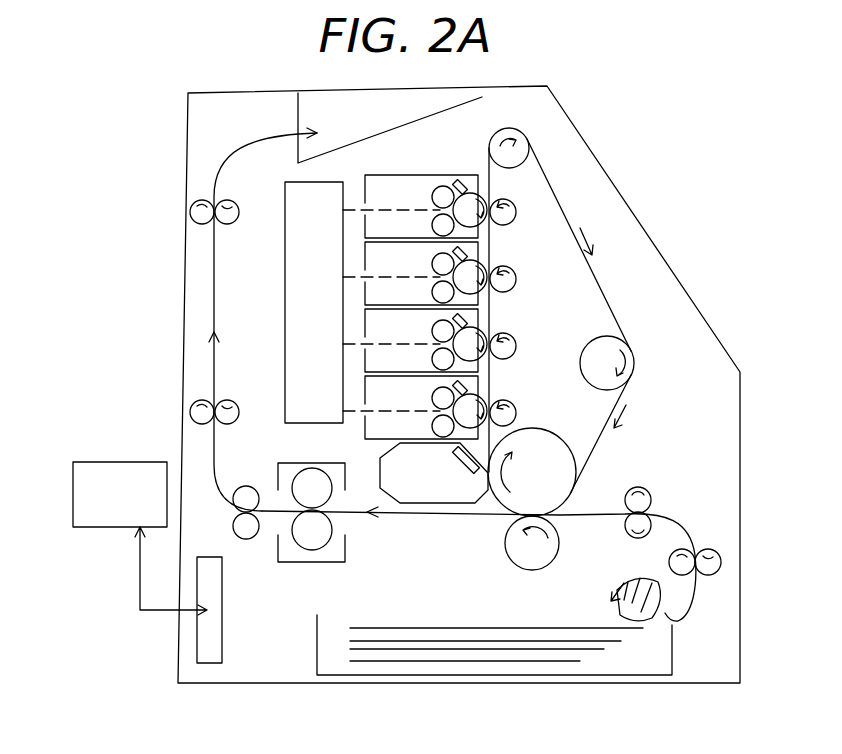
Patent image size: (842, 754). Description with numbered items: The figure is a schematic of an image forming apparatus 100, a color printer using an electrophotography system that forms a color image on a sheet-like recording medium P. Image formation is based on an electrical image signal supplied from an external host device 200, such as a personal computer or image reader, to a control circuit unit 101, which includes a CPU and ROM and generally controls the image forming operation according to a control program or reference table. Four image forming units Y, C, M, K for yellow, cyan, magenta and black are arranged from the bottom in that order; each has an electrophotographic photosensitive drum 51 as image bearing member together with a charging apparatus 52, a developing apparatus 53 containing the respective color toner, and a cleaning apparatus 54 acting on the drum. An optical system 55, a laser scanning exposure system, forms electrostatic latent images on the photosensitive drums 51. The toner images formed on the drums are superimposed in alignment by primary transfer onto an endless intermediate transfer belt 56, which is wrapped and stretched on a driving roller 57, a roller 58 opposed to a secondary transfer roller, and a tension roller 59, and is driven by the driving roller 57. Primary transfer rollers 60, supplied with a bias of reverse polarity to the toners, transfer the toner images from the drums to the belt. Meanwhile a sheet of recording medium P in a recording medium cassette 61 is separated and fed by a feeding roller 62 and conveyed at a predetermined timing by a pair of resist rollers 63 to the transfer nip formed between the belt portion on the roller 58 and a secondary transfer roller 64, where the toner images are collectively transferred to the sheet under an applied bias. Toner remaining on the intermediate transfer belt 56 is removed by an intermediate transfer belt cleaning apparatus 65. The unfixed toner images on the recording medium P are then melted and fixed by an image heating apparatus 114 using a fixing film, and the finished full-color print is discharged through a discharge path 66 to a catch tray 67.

The image forming apparatus 100 is at (663, 223).
The electrophotographic photosensitive drum 51 is at (480, 202).
The charging apparatus 52 is at (432, 197).
The developing apparatus 53 is at (432, 225).
The cleaning apparatus 54 is at (459, 181).
The optical system 55 is at (285, 262).
The intermediate transfer belt 56 is at (601, 291).
The driving roller 57 is at (507, 128).
The roller opposed to a secondary transfer roller 58 is at (563, 442).
The tension roller 59 is at (594, 348).
The primary transfer roller 60 is at (516, 214).
The recording medium cassette 61 is at (317, 651).
The feeding roller 62 is at (630, 578).
The resist rollers 63 is at (645, 491).
The secondary transfer roller 64 is at (550, 563).
The intermediate transfer belt cleaning apparatus 65 is at (470, 473).
The discharge path 66 is at (216, 292).
The catch tray 67 is at (385, 132).
The control circuit unit 101 is at (222, 582).
The image heating apparatus 114 is at (284, 452).
The external host device 200 is at (108, 466).
The image forming unit for black K is at (366, 177).
The image forming unit for magenta M is at (366, 244).
The image forming unit for cyan C is at (366, 311).
The image forming unit for yellow Y is at (366, 378).
The recording medium P is at (496, 628).